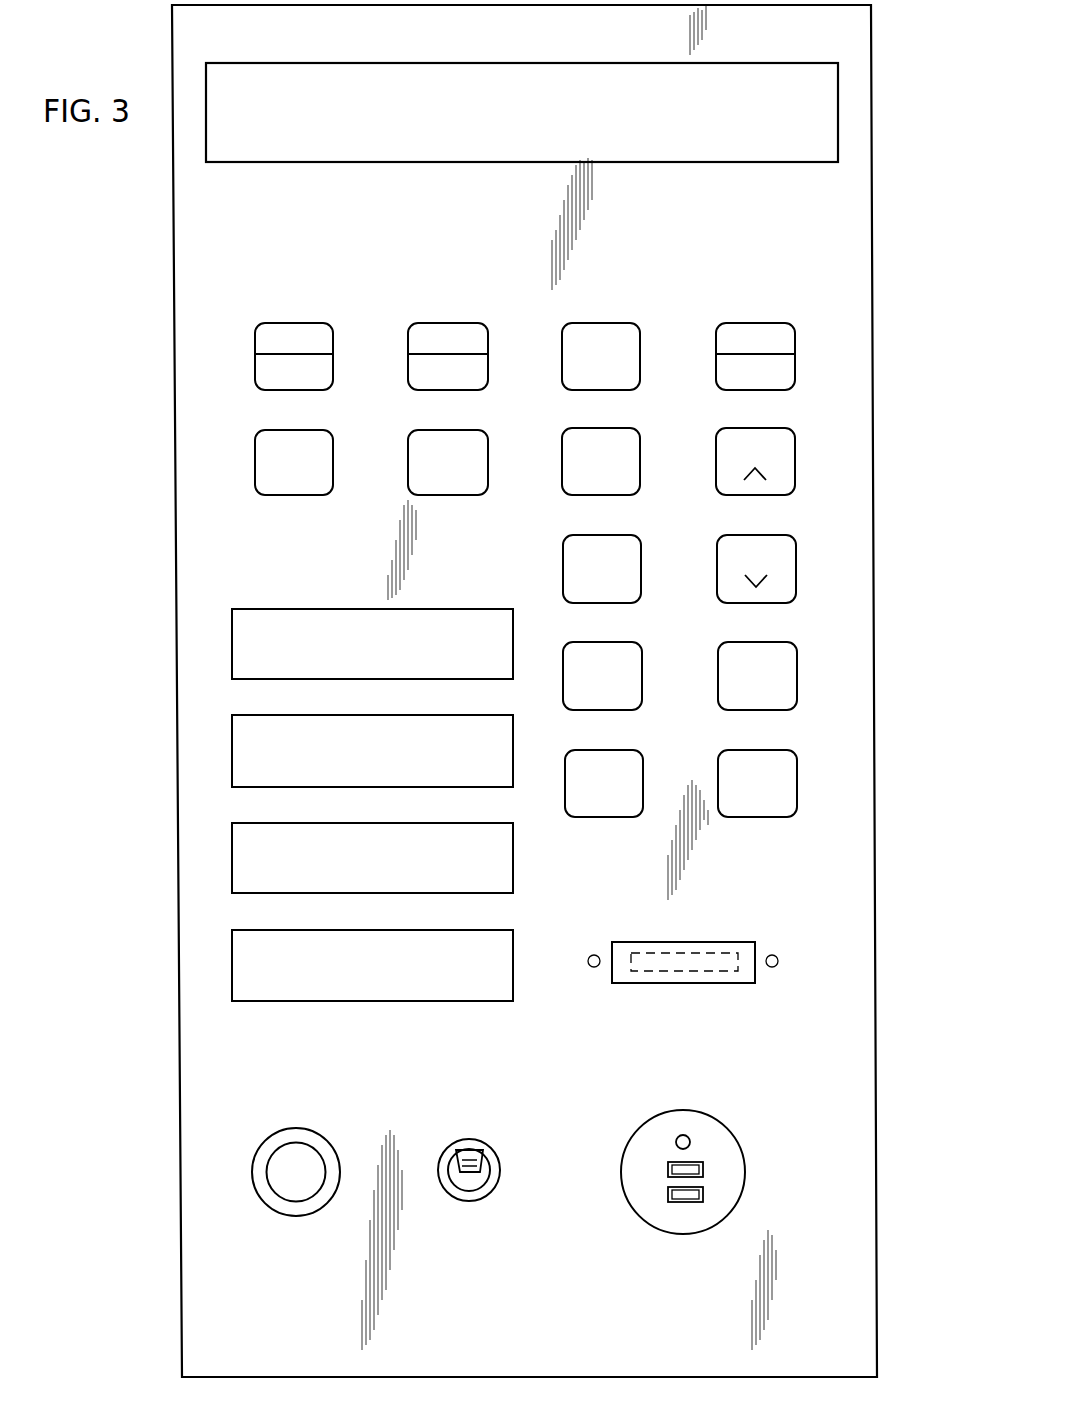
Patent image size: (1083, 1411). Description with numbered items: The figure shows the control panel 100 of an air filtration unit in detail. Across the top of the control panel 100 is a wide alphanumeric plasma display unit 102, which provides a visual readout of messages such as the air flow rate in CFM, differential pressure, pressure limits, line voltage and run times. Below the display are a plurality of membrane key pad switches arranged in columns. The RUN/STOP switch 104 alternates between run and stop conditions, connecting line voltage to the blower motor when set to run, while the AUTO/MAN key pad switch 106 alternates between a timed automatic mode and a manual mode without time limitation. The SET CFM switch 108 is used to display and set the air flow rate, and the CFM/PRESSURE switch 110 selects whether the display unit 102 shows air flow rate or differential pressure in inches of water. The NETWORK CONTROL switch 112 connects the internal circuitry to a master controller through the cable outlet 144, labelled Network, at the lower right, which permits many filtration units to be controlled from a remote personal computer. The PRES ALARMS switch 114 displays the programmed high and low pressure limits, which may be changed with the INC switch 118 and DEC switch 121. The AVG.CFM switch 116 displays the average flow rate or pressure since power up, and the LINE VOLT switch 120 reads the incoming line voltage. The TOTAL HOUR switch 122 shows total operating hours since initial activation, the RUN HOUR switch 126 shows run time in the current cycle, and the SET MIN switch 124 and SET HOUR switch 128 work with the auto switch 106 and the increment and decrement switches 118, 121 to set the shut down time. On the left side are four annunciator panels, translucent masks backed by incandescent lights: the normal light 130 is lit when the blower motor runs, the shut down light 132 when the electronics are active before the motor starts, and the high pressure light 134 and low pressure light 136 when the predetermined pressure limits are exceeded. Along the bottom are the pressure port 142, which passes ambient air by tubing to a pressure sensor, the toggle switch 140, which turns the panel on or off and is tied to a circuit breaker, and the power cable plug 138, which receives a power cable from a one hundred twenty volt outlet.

The control panel 100 is at (880, 78).
The alphanumeric plasma display unit 102 is at (428, 62).
The RUN/STOP switch 104 is at (313, 323).
The AUTO/MAN key pad switch 106 is at (473, 323).
The SET CFM key pad switch 108 is at (613, 323).
The CFM/PRESSURE key pad switch 110 is at (768, 323).
The NETWORK CONTROL switch 112 is at (310, 495).
The PRES ALARMS key pad switch 114 is at (463, 495).
The AVG.CFM switch 116 is at (605, 428).
The INC switch 118 is at (760, 428).
The LINE VOLT switch 120 is at (607, 535).
The DEC switch 121 is at (762, 535).
The TOTAL HOUR switch 122 is at (609, 642).
The SET MIN switch 124 is at (763, 642).
The RUN HOUR switch 126 is at (614, 750).
The SET HOUR switch 128 is at (768, 750).
The normal annunciator light 130 is at (232, 643).
The shut down annunciator light 132 is at (232, 752).
The high pressure annunciator light 134 is at (232, 858).
The low pressure annunciator light 136 is at (232, 961).
The power cable plug 138 is at (735, 1135).
The toggle switch 140 is at (497, 1150).
The pressure port 142 is at (332, 1148).
The cable outlet 144 is at (756, 942).